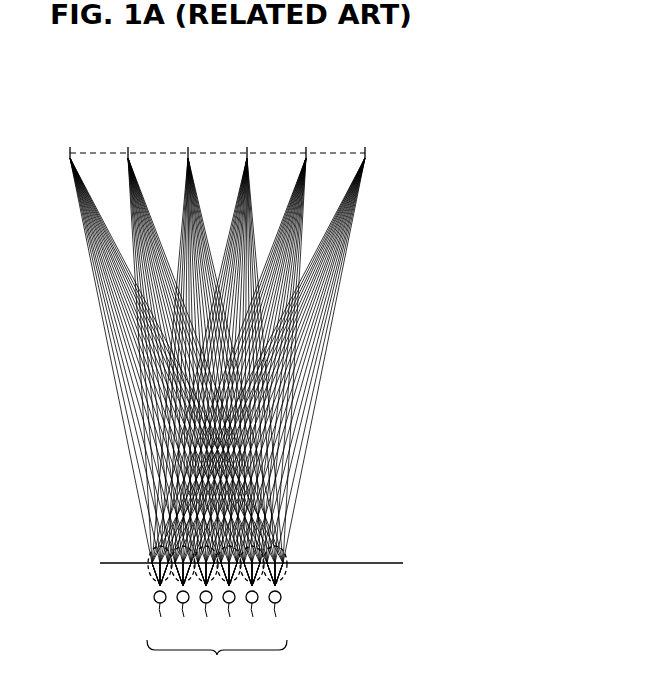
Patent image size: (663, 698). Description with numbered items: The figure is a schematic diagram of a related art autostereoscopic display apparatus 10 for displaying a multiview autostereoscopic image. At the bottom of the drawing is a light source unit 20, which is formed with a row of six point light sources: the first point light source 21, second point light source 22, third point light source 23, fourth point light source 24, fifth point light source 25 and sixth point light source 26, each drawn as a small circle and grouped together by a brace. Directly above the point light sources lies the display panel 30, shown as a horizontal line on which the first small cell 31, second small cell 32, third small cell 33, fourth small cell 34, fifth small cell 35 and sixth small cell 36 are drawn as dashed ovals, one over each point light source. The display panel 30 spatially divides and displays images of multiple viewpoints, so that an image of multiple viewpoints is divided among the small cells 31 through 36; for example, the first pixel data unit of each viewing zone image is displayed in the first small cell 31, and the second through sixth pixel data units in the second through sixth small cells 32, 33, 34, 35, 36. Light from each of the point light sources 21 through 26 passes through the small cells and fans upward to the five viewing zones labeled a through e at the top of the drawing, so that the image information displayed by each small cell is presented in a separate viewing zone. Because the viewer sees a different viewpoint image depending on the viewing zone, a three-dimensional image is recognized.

The autostereoscopic display apparatus 10 is at (400, 136).
The light source unit 20 is at (217, 658).
The first point light source 21 is at (159, 615).
The second point light source 22 is at (182, 615).
The third point light source 23 is at (205, 615).
The fourth point light source 24 is at (229, 615).
The fifth point light source 25 is at (252, 615).
The sixth point light source 26 is at (275, 615).
The display panel 30 is at (390, 563).
The first small cell 31 is at (150, 553).
The second small cell 32 is at (183, 547).
The third small cell 33 is at (206, 547).
The fourth small cell 34 is at (232, 547).
The fifth small cell 35 is at (254, 547).
The sixth small cell 36 is at (286, 556).